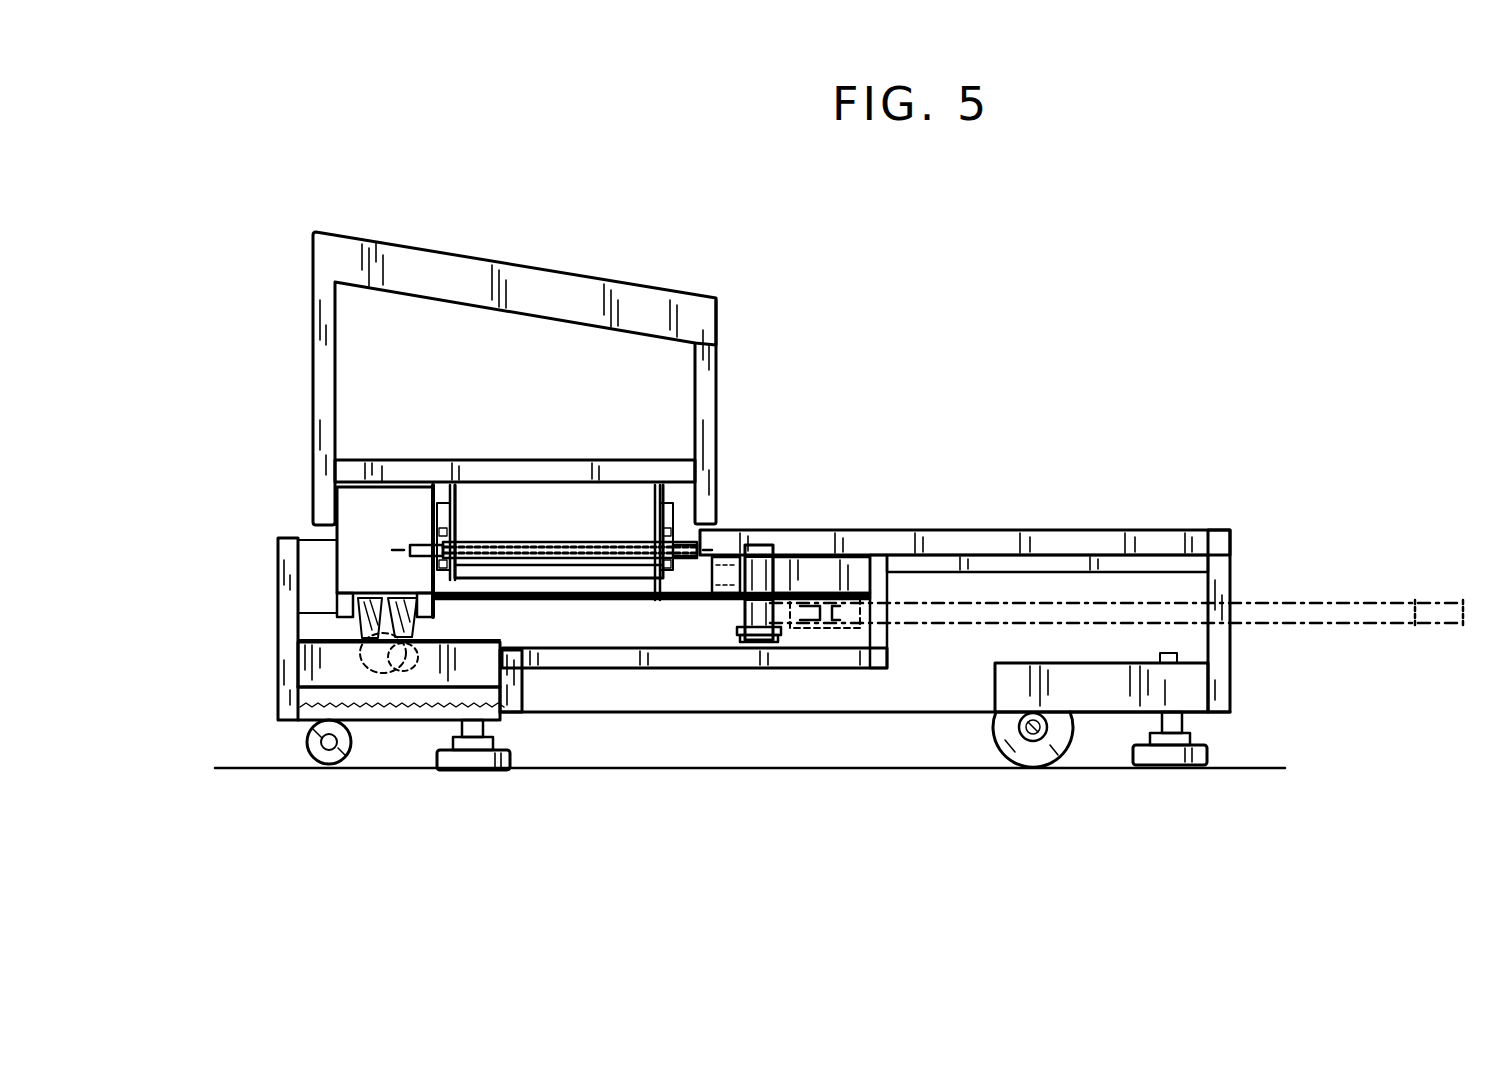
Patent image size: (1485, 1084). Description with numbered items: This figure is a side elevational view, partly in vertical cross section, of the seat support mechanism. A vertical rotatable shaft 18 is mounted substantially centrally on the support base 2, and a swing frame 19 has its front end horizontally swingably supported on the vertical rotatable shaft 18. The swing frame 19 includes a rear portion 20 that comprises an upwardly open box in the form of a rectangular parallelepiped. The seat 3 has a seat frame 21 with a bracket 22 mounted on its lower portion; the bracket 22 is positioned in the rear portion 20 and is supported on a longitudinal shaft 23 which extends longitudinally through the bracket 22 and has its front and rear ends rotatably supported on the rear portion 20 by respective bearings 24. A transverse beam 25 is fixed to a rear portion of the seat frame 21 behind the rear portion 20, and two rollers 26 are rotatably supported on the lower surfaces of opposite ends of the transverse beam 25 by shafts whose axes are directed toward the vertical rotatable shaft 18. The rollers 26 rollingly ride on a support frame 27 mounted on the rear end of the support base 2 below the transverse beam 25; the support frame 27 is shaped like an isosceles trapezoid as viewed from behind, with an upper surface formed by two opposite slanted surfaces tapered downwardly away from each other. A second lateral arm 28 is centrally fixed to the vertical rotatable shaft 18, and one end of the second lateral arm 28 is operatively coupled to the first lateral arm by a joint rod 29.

The support base 2 is at (1089, 529).
The seat 3 is at (313, 311).
The vertical rotatable shaft 18 is at (762, 547).
The swing frame 19 is at (620, 599).
The rear portion 20 is at (538, 600).
The seat frame 21 is at (717, 378).
The bracket 22 is at (665, 492).
The longitudinal shaft 23 is at (540, 540).
The bearings 24 is at (432, 528).
The transverse beam 25 is at (330, 612).
The rollers 26 is at (353, 635).
The support frame 27 is at (280, 665).
The second lateral arm 28 is at (738, 605).
The joint rod 29 is at (1298, 623).